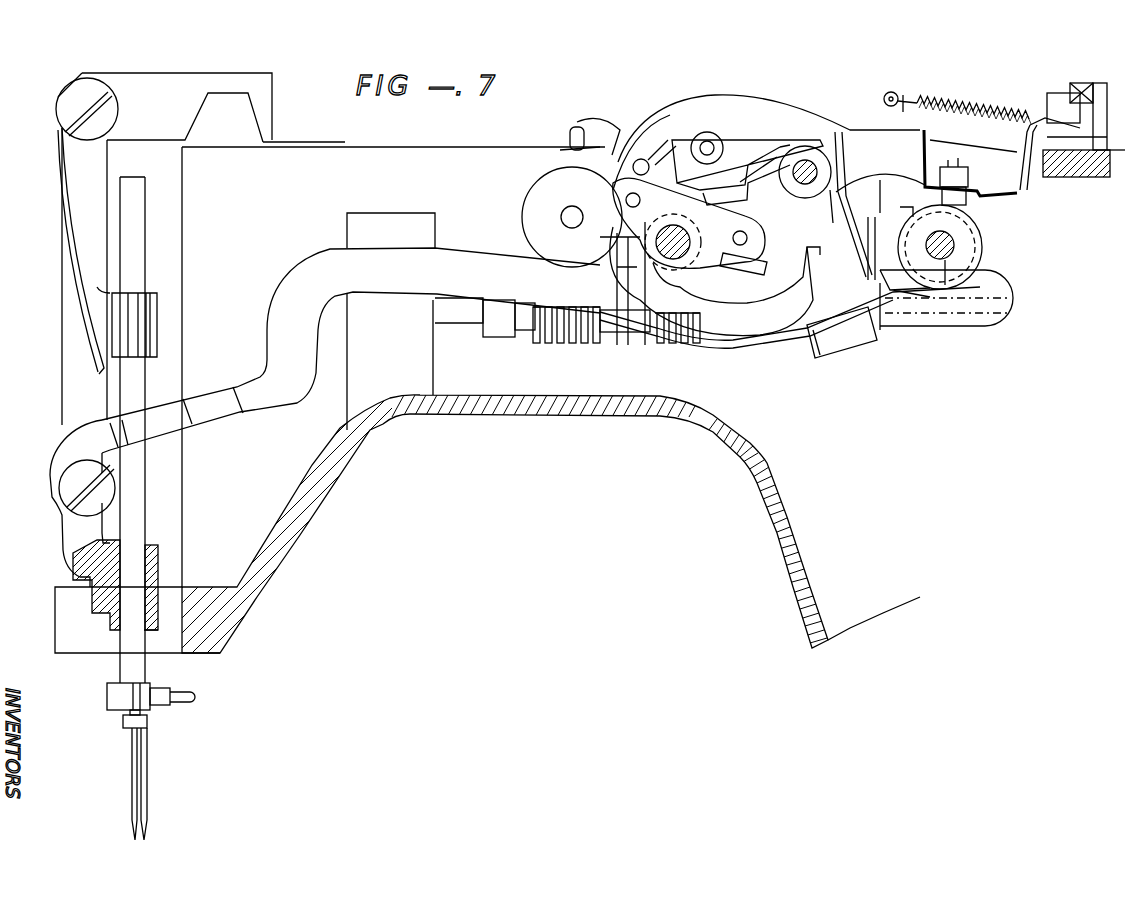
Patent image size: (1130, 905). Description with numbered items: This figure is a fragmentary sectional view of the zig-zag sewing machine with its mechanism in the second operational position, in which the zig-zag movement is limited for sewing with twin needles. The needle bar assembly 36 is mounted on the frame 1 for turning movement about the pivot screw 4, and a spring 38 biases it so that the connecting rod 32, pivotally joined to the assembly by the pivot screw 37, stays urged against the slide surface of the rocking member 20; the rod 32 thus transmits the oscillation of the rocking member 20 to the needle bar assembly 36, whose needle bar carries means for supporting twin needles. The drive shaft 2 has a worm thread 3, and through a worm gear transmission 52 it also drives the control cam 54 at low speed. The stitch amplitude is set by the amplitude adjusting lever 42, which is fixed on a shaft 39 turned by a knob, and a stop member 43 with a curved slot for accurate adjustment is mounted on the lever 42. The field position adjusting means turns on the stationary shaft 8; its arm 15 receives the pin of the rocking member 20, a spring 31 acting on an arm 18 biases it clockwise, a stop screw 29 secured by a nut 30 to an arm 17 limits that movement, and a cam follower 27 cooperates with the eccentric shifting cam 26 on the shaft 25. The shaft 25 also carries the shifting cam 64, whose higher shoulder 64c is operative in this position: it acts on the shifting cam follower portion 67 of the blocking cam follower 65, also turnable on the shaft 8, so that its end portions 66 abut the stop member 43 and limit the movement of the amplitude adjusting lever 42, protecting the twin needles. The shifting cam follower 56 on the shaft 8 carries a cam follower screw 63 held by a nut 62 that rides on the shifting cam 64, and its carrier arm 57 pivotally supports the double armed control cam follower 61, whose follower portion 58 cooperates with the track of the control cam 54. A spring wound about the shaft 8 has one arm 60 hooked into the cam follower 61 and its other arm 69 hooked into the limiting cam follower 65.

The frame 1 is at (193, 83).
The drive shaft 2 is at (466, 325).
The worm thread 3 is at (662, 320).
The pivot screw 4 is at (60, 115).
The stationary shaft 8 is at (805, 160).
The arm 15 is at (897, 197).
The arm 17 is at (1028, 118).
The arm 18 is at (888, 97).
The rocking member 20 is at (842, 310).
The shaft 25 is at (945, 285).
The eccentric shifting cam 26 is at (955, 265).
The cam follower 27 is at (957, 210).
The stop screw 29 is at (1105, 115).
The nut 30 is at (1088, 95).
The spring 31 is at (993, 112).
The connecting rod 32 is at (462, 270).
The needle bar assembly 36 is at (72, 378).
The pivot screw 37 is at (70, 492).
The spring 38 is at (82, 295).
The shaft 39 is at (677, 258).
The amplitude adjusting lever 42 is at (650, 322).
The stop member 43 is at (605, 325).
The worm gear transmission 52 is at (558, 320).
The control cam 54 is at (552, 185).
The shifting cam follower 56 is at (775, 125).
The carrier arm 57 is at (648, 150).
The follower portion 58 is at (576, 127).
The spring arm 60 is at (738, 135).
The double armed control cam follower 61 is at (622, 148).
The nut 62 is at (960, 194).
The cam follower screw 63 is at (960, 204).
The shifting cam 64 is at (930, 290).
The higher shoulder 64c is at (935, 255).
The cam follower 65 is at (836, 235).
The end portions 66 is at (623, 322).
The shifting cam follower portion 67 is at (890, 308).
The spring arm 69 is at (815, 305).